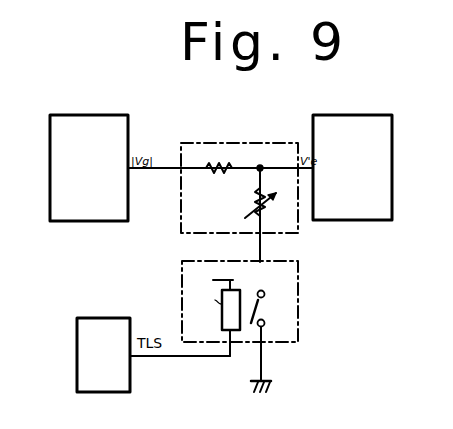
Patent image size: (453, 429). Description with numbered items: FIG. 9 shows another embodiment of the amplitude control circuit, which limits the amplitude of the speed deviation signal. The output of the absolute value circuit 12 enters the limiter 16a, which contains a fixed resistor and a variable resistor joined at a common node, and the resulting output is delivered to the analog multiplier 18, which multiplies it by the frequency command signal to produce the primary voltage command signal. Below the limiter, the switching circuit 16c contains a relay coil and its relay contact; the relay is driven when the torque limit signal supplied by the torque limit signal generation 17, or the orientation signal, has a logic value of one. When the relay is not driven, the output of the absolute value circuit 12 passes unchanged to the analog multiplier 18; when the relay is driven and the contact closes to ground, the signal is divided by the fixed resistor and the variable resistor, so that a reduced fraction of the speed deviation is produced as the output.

The absolute value circuit 12 is at (83, 125).
The analog multiplier 18 is at (354, 121).
The limiter 16a is at (250, 153).
The switching circuit 16c is at (296, 288).
The torque limit signal generation 17 is at (103, 392).